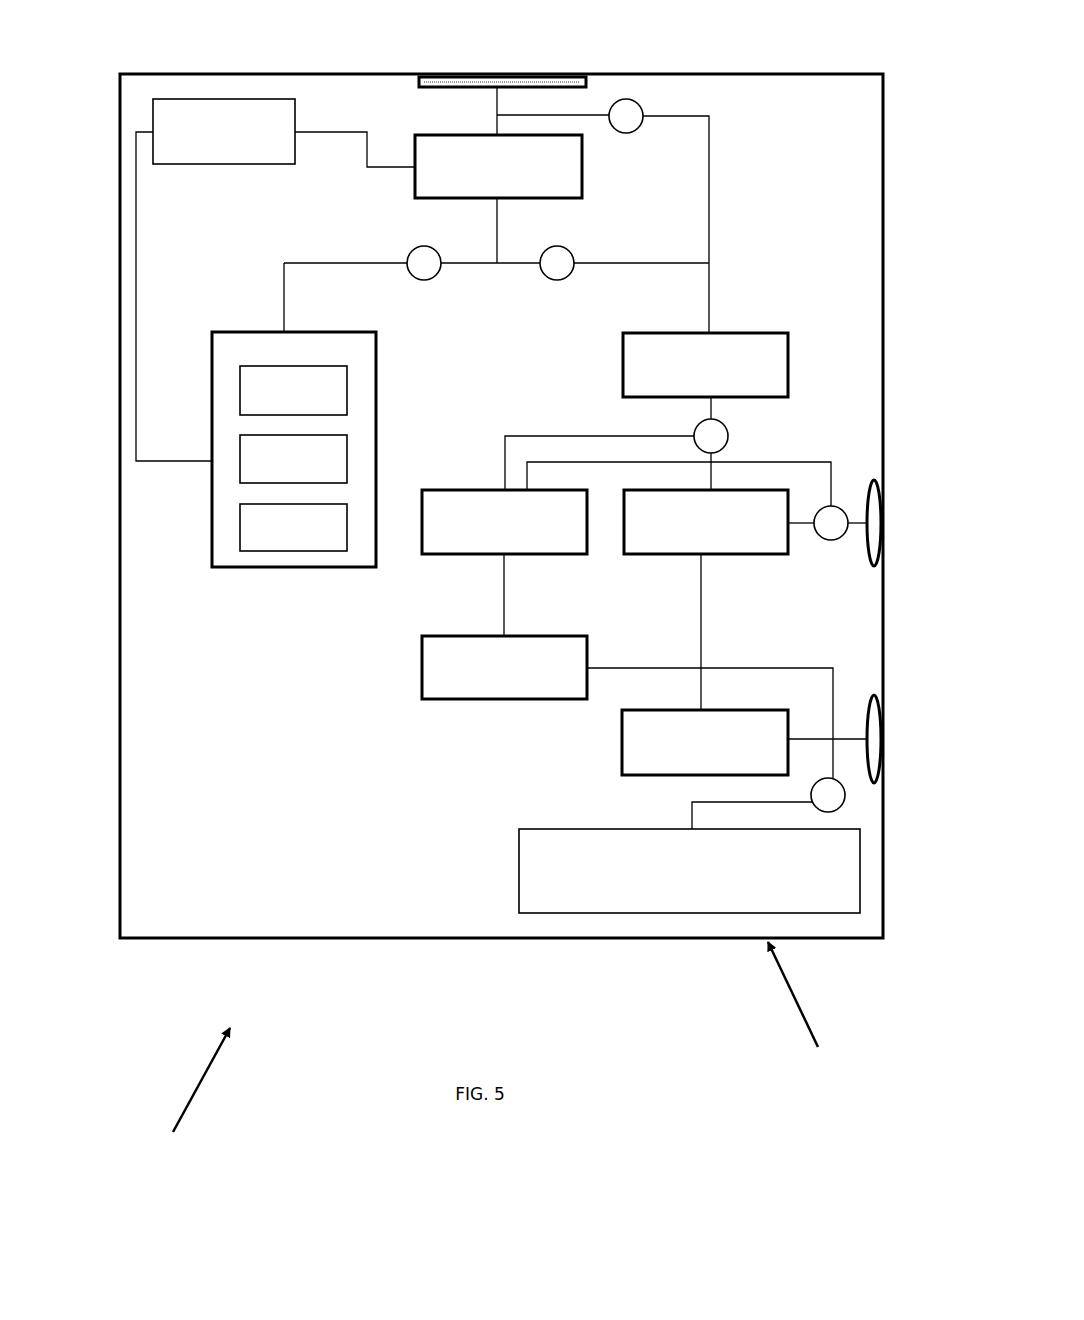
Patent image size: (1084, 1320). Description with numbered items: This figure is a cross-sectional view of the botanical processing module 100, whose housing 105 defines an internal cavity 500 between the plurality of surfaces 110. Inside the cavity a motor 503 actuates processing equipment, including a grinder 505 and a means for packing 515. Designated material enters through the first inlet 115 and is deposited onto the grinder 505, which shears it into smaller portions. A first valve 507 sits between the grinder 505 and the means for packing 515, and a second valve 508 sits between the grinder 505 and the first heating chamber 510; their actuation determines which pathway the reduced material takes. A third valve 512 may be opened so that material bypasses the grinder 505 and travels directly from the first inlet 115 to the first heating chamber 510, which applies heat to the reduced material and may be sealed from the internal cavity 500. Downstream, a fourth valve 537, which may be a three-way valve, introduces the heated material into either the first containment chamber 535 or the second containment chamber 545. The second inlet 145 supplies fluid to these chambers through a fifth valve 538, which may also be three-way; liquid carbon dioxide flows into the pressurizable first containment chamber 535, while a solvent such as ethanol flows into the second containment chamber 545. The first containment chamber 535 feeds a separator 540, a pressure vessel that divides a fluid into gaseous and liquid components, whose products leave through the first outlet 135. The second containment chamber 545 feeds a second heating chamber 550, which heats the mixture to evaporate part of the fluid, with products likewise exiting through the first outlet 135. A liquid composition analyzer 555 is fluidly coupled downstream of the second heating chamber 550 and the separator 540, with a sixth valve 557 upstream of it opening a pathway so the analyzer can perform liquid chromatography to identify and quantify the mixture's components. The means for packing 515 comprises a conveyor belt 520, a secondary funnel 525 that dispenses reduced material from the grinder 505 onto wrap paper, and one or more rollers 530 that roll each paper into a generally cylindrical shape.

The botanical processing module 100 is at (193, 1096).
The housing 105 is at (805, 1011).
The plurality of surfaces 110 is at (119, 252).
The first inlet 115 is at (589, 73).
The first outlet 135 is at (872, 722).
The second inlet 145 is at (873, 510).
The internal cavity 500 is at (818, 145).
The motor 503 is at (275, 280).
The grinder 505 is at (512, 175).
The first valve 507 is at (410, 250).
The second valve 508 is at (547, 274).
The first heating chamber 510 is at (705, 376).
The third valve 512 is at (640, 101).
The means for packing 515 is at (281, 386).
The conveyor belt 520 is at (293, 390).
The secondary funnel 525 is at (293, 459).
The rollers 530 is at (293, 527).
The first containment chamber 535 is at (719, 600).
The fourth valve 537 is at (728, 436).
The fifth valve 538 is at (833, 540).
The separator 540 is at (745, 742).
The second containment chamber 545 is at (504, 563).
The second heating chamber 550 is at (627, 707).
The liquid composition analyzer 555 is at (689, 871).
The sixth valve 557 is at (843, 801).